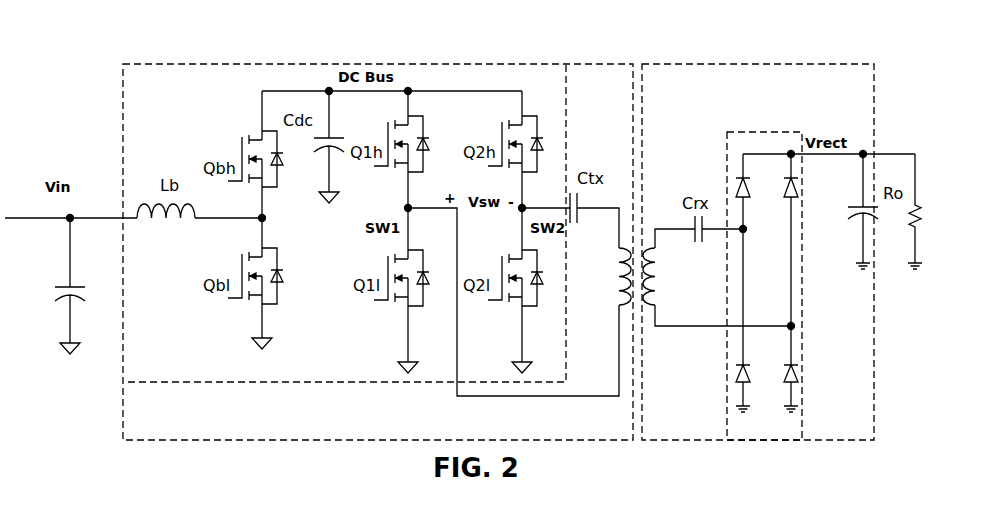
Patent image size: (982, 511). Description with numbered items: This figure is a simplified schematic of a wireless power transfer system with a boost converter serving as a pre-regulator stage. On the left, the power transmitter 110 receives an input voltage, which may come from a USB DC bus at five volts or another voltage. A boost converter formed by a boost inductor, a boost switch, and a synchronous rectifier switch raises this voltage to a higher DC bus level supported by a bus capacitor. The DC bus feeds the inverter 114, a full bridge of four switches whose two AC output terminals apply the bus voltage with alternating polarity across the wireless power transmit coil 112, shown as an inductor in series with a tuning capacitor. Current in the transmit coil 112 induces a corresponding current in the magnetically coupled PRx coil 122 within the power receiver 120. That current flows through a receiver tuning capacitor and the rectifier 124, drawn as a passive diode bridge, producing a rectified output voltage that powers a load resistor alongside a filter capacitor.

The power transmitter 110 is at (605, 64).
The wireless power transmit coil 112 is at (616, 298).
The inverter 114 is at (345, 383).
The power receiver 120 is at (750, 64).
The PRx coil 122 is at (657, 285).
The rectifier 124 is at (760, 132).